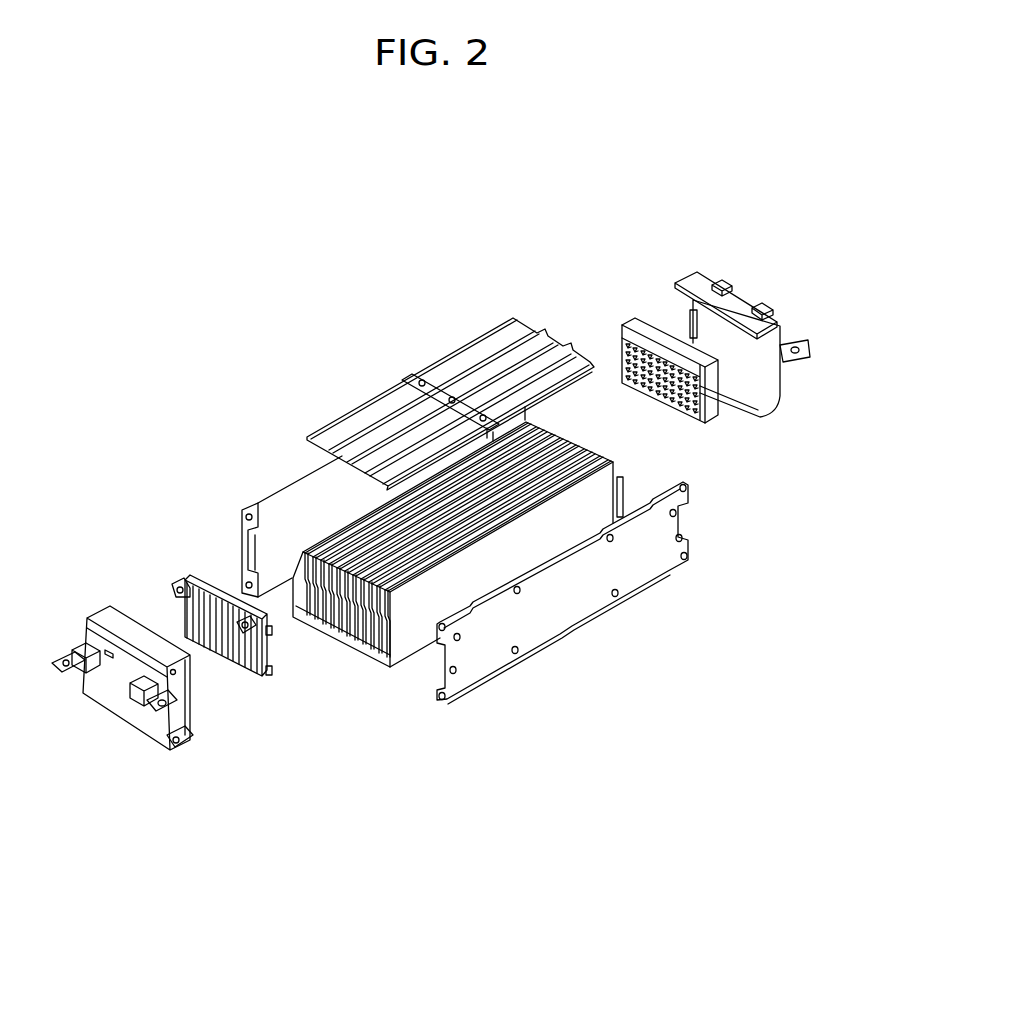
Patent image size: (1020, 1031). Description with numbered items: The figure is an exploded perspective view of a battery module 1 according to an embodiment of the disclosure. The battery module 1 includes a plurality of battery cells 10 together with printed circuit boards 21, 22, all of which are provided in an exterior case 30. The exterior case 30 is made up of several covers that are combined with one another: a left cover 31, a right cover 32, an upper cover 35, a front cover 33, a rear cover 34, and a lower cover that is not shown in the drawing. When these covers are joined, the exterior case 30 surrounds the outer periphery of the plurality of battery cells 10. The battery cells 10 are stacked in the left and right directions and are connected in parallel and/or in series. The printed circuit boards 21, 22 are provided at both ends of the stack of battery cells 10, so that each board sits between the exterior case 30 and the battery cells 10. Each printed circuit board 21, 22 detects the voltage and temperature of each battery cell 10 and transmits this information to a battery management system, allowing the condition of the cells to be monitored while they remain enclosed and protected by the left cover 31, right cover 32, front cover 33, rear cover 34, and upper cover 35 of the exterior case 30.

The battery module 1 is at (263, 301).
The battery cells 10 is at (355, 545).
The printed circuit board 21 is at (270, 680).
The printed circuit board 22 is at (710, 417).
The exterior case 30 is at (724, 887).
The left cover 31 is at (298, 485).
The right cover 32 is at (527, 630).
The front cover 33 is at (123, 715).
The rear cover 34 is at (773, 412).
The upper cover 35 is at (447, 358).